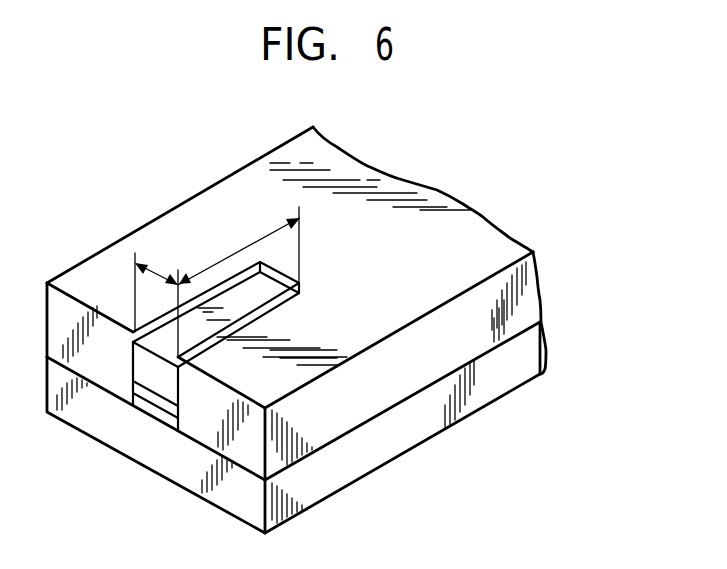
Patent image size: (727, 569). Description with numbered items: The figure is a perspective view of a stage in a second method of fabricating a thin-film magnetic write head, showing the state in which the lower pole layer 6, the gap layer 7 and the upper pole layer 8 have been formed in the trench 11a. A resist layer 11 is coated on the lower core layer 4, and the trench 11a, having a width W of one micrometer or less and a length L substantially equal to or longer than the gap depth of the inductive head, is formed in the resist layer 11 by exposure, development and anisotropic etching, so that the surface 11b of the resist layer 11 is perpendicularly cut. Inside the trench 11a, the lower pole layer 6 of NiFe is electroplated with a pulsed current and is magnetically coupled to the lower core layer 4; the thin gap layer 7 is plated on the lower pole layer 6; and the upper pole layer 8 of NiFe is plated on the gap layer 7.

The lower core layer 4 is at (532, 350).
The lower pole layer 6 is at (167, 420).
The gap layer 7 is at (152, 395).
The upper pole layer 8 is at (147, 367).
The resist layer 11 is at (530, 295).
The trench 11a is at (262, 298).
The surface of the resist layer 11b is at (452, 242).